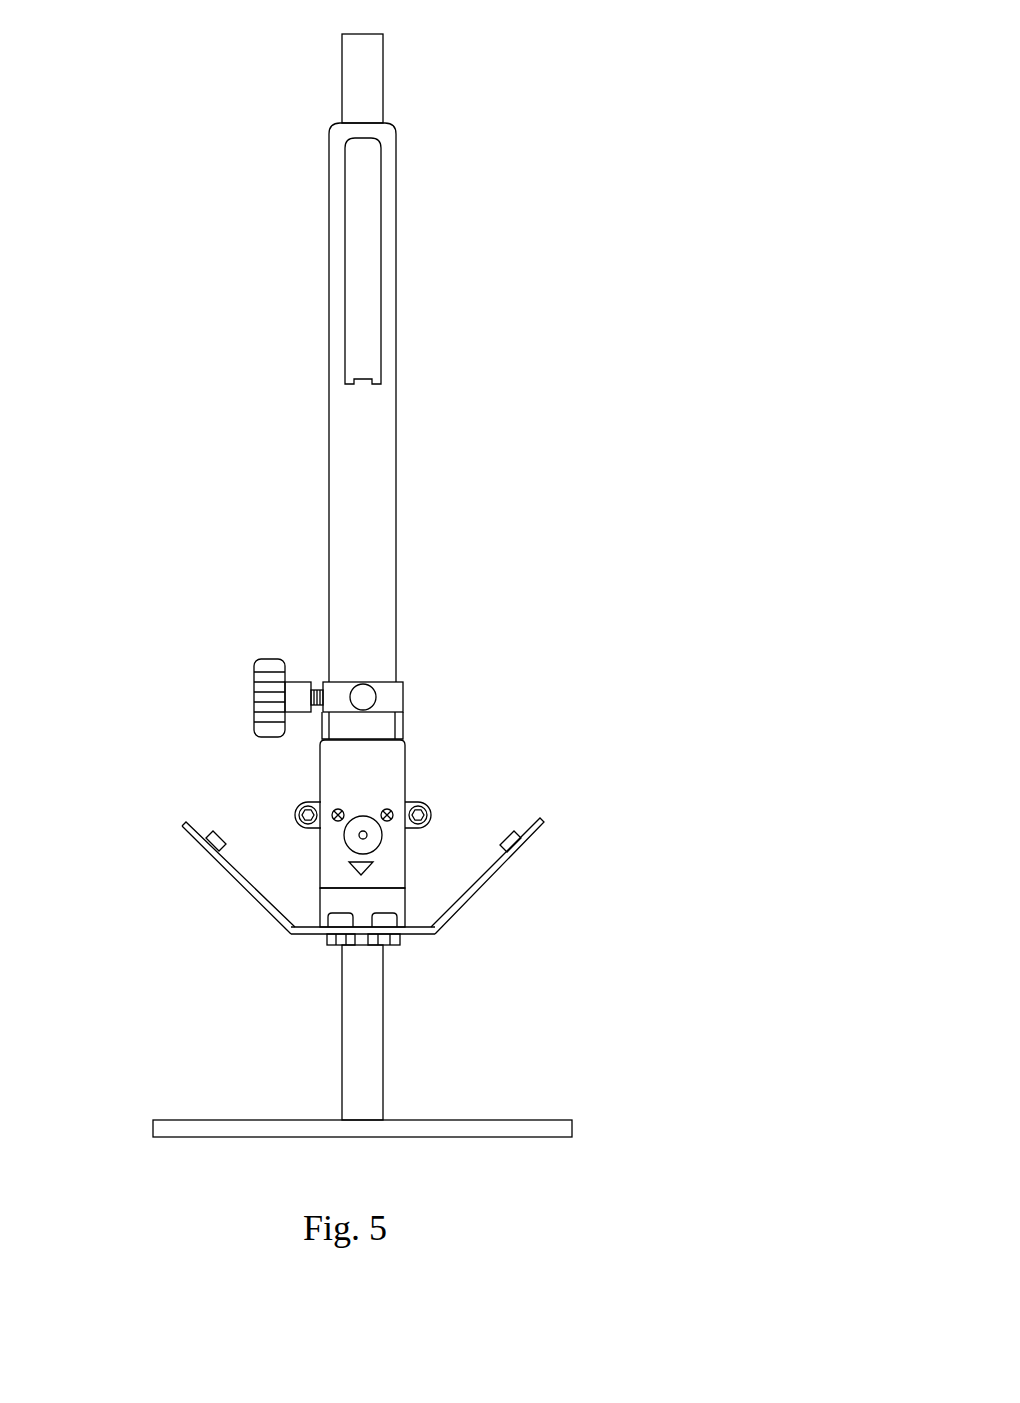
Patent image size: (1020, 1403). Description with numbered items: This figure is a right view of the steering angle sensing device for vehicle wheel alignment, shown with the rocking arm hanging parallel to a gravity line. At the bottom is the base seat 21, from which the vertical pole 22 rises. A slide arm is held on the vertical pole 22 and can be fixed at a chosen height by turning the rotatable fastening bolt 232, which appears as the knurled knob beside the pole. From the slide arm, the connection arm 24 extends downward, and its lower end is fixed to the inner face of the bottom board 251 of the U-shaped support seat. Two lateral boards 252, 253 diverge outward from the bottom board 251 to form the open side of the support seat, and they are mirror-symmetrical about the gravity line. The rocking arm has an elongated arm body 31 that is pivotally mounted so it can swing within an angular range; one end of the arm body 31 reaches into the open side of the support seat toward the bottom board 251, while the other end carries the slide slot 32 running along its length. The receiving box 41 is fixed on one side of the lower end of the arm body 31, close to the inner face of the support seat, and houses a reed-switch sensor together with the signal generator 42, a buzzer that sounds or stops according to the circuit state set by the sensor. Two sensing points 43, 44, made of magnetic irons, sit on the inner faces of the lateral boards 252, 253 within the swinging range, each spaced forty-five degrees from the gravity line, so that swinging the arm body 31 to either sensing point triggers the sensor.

The base seat 21 is at (525, 1120).
The vertical pole 22 is at (367, 79).
The connection arm 24 is at (340, 905).
The arm body 31 is at (380, 503).
The slide slot 32 is at (380, 263).
The receiving box 41 is at (392, 757).
The signal generator 42 is at (367, 817).
The sensing point 43 is at (216, 838).
The sensing point 44 is at (507, 838).
The rotatable fastening bolt 232 is at (273, 657).
The bottom board 251 is at (407, 940).
The lateral board 252 is at (237, 880).
The lateral board 253 is at (492, 880).